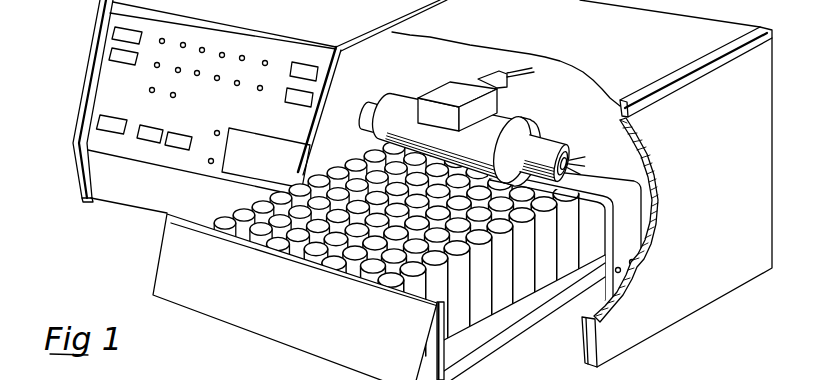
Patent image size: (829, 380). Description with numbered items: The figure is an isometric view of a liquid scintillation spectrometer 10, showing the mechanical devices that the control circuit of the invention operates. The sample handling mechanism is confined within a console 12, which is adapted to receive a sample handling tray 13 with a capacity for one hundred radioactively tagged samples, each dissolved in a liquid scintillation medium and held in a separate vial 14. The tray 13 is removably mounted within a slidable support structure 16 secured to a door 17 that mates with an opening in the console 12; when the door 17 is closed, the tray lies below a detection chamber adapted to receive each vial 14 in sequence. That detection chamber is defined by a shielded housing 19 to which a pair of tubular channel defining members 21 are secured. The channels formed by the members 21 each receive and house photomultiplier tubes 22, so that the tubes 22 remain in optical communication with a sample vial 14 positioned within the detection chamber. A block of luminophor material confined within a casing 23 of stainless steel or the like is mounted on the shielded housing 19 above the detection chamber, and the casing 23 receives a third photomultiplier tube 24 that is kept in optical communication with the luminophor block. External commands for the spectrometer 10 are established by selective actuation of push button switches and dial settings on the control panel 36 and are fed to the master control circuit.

The liquid scintillation spectrometer 10 is at (143, 245).
The console 12 is at (702, 288).
The sample handling tray 13 is at (478, 340).
The vial 14 is at (467, 305).
The slidable support structure 16 is at (531, 325).
The door 17 is at (277, 323).
The shielded housing 19 is at (505, 114).
The tubular channel defining members 21 is at (375, 101).
The photomultiplier tubes 22 is at (571, 157).
The casing 23 is at (443, 93).
The third photomultiplier tube 24 is at (518, 78).
The control panel 36 is at (182, 160).